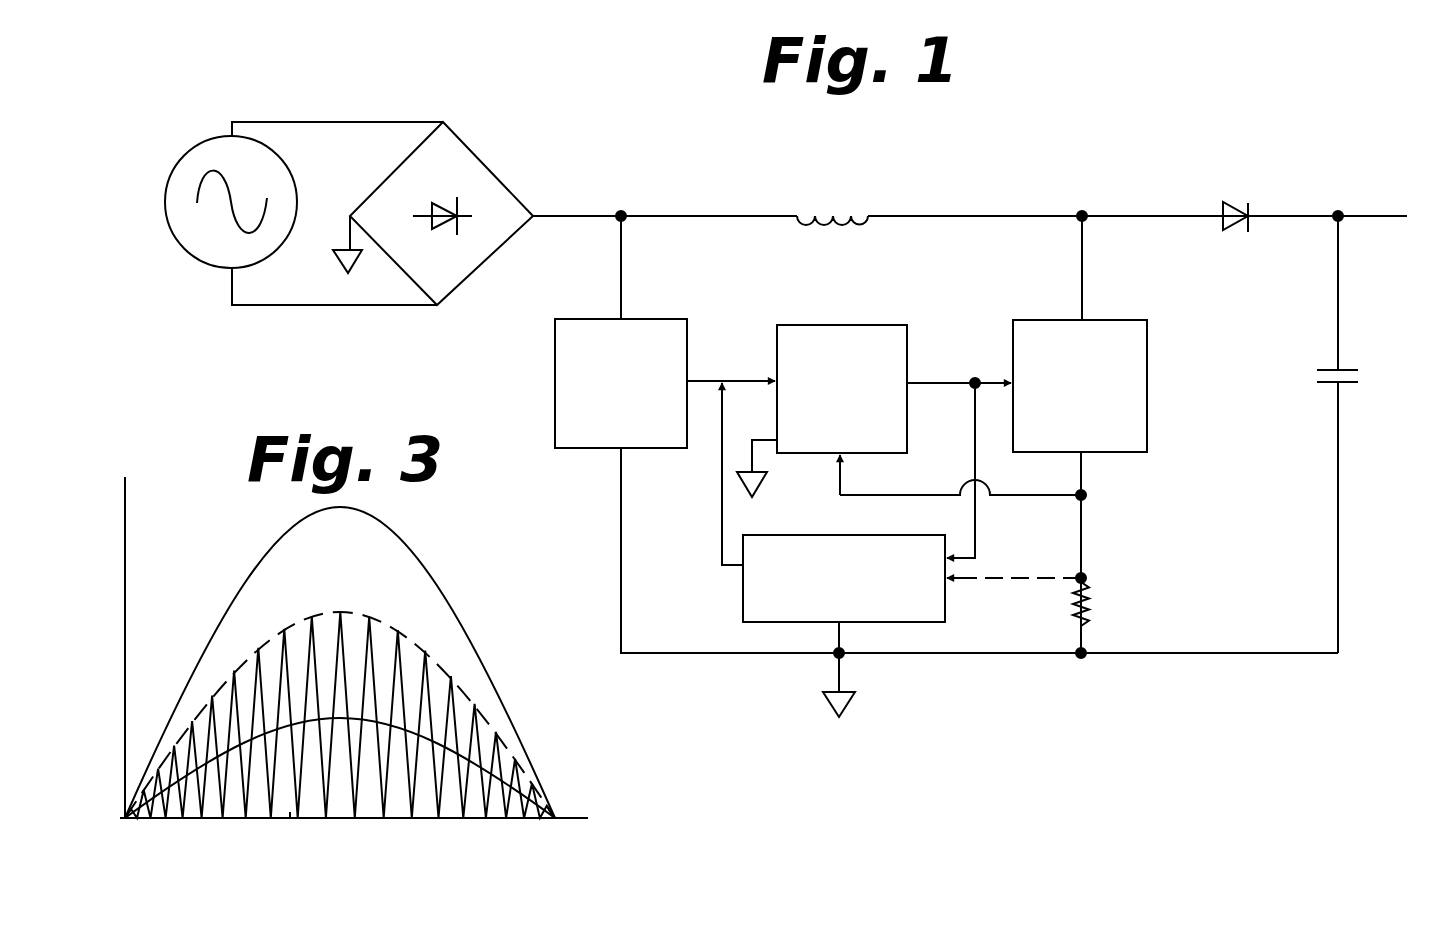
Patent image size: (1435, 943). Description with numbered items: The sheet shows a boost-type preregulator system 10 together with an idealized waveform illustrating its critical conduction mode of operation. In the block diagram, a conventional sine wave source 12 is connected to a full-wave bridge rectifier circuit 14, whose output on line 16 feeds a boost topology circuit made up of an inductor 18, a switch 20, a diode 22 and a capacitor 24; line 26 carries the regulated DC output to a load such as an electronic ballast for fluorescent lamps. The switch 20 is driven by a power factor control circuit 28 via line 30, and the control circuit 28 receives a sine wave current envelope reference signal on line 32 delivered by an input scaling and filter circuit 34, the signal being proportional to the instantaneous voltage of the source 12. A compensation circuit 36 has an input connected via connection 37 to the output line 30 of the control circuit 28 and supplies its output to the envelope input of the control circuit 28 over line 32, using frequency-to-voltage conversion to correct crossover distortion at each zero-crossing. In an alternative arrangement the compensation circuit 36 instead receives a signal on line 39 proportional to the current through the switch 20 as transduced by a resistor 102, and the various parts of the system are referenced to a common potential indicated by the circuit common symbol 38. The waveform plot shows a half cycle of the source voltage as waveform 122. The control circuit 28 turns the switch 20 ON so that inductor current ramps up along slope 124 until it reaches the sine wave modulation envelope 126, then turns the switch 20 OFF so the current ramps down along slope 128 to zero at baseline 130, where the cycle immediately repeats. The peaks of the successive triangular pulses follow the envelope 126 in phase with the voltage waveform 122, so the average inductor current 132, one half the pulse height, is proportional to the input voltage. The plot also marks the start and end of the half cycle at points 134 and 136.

In FIG. 1, the preregulator system 10 is at (1022, 185).
In FIG. 1, the sine wave source 12 is at (202, 257).
In FIG. 1, the full-wave bridge rectifier circuit 14 is at (474, 138).
In FIG. 1, the line 16 is at (573, 216).
In FIG. 1, the inductor 18 is at (855, 216).
In FIG. 1, the switch 20 is at (1148, 378).
In FIG. 1, the diode 22 is at (1236, 234).
In FIG. 1, the capacitor 24 is at (1330, 383).
In FIG. 1, the line 26 is at (1385, 216).
In FIG. 1, the power factor control circuit 28 is at (890, 325).
In FIG. 1, the line 30 is at (942, 382).
In FIG. 1, the line 32 is at (738, 380).
In FIG. 1, the input scaling and filter circuit 34 is at (668, 319).
In FIG. 1, the compensation circuit 36 is at (847, 535).
In FIG. 1, the line or connection 37 is at (976, 520).
In FIG. 1, the circuit common symbol 38 is at (848, 711).
In FIG. 1, the line 39 is at (1013, 580).
In FIG. 1, the resistor 102 is at (1089, 607).
In FIG. 3, the voltage waveform 122 is at (470, 632).
In FIG. 3, the slope 124 is at (277, 653).
In FIG. 3, the modulation envelope 126 is at (307, 612).
In FIG. 3, the slope 128 is at (297, 802).
In FIG. 3, the baseline 130 is at (405, 820).
In FIG. 3, the average inductor current 132 is at (433, 743).
In FIG. 3, the line voltage zero crossing start 134 is at (131, 827).
In FIG. 3, the line voltage zero crossing end 136 is at (558, 824).